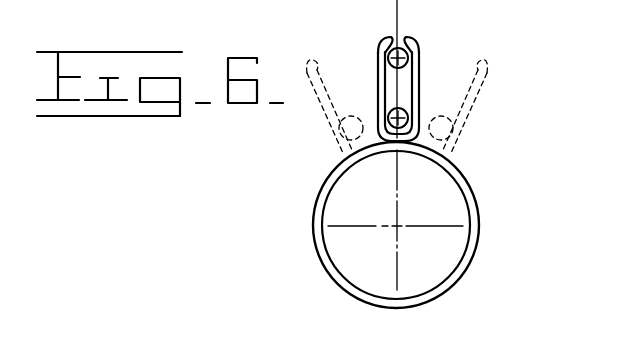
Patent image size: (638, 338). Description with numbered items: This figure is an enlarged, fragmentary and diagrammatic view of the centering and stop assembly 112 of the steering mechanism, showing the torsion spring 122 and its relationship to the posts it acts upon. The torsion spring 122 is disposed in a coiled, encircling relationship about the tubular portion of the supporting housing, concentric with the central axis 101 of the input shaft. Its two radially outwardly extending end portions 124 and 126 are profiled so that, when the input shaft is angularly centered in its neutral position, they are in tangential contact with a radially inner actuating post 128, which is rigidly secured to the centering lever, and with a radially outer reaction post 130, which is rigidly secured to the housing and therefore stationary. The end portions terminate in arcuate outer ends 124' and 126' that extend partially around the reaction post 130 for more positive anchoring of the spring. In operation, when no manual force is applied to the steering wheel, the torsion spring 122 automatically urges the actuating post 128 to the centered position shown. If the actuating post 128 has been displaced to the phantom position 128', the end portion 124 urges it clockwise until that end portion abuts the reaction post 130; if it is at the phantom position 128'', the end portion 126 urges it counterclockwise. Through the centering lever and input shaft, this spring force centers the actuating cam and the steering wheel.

The centering and stop assembly 112 is at (312, 181).
The torsion spring 122 is at (315, 247).
The central axis 101 is at (392, 224).
The end portion of the torsion spring 124 is at (364, 96).
The end portion of the torsion spring 126 is at (431, 96).
The arcuate outer end 124' is at (365, 33).
The arcuate outer end 126' is at (435, 33).
The reaction post 130 is at (406, 55).
The actuating post 128 is at (369, 107).
The phantom position of the actuating post 128' is at (323, 107).
The phantom position of the actuating post 128'' is at (479, 107).